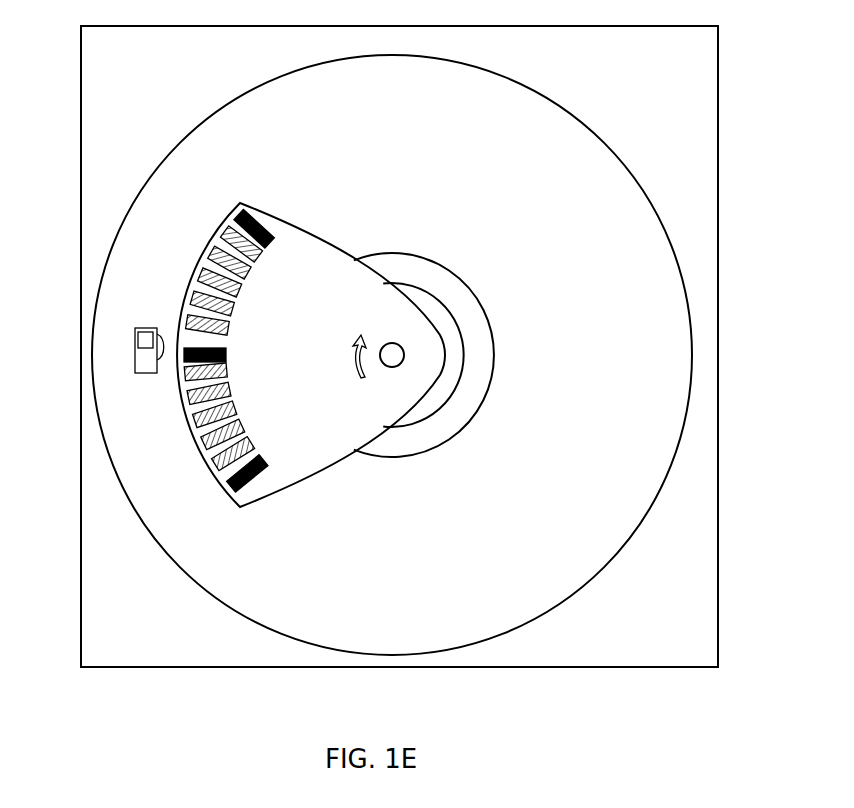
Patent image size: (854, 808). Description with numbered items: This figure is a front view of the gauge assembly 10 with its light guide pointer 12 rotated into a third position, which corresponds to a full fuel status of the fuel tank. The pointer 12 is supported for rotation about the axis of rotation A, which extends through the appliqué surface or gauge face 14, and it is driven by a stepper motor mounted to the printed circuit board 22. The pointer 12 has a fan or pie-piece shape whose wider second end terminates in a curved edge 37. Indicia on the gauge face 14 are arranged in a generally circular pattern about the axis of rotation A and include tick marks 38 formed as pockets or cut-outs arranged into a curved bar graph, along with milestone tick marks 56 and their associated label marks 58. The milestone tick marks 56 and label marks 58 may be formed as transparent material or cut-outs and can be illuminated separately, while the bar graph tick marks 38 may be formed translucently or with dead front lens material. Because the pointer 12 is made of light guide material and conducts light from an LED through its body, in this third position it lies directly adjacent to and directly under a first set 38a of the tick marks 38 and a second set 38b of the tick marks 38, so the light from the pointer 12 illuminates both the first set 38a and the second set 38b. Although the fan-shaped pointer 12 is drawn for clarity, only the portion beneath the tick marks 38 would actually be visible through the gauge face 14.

The gauge assembly 10 is at (750, 188).
The pointer 12 is at (307, 248).
The gauge face 14 is at (573, 140).
The printed circuit board 22 is at (697, 600).
The curved edge 37 is at (303, 480).
The tick marks 38 is at (225, 232).
The first set of tick marks 38a is at (236, 362).
The second set of tick marks 38b is at (270, 249).
The milestone tick marks 56 is at (268, 228).
The label marks 58 is at (135, 358).
The axis of rotation A is at (404, 355).